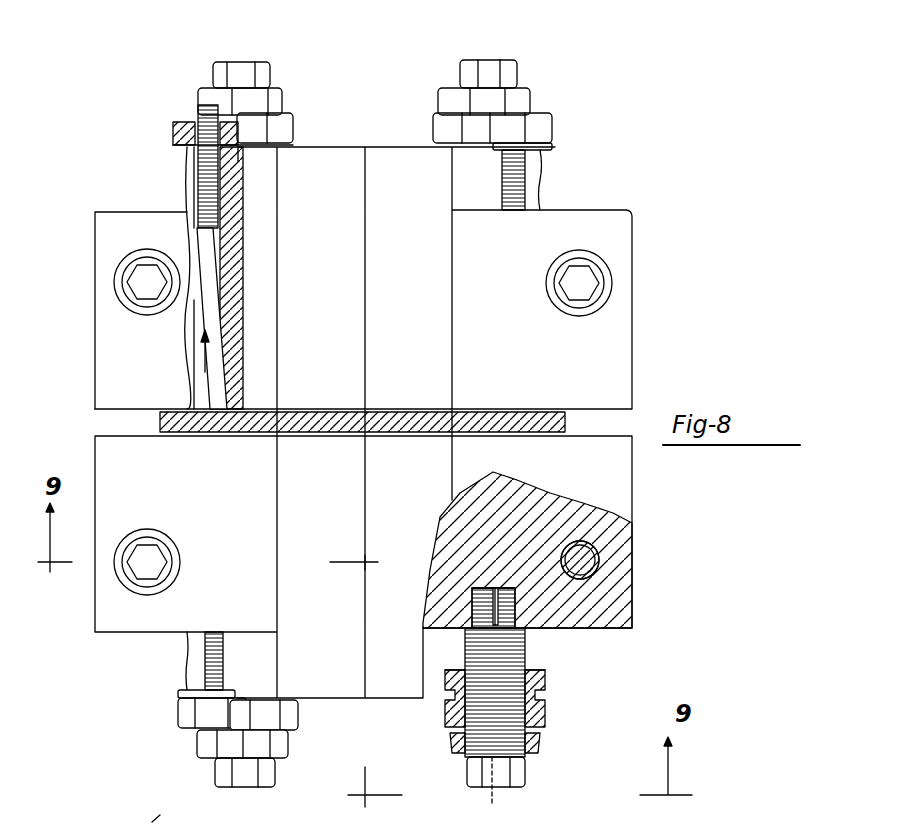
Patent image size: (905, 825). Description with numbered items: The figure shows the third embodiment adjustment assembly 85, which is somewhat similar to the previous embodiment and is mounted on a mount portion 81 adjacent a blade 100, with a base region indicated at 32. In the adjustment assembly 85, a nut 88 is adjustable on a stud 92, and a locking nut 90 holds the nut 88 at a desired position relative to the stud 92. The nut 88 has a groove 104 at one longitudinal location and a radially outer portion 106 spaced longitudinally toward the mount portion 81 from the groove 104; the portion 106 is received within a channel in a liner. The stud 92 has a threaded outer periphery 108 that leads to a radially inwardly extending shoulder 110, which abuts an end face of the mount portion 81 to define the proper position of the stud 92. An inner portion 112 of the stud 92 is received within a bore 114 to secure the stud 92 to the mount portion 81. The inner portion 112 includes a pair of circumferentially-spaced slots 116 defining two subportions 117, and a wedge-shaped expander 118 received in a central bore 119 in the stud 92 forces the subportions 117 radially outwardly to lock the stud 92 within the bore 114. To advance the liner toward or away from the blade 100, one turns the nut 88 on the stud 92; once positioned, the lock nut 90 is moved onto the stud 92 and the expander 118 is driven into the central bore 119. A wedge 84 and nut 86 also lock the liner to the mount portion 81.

The base frame 32 is at (177, 809).
The mount portion 81 is at (125, 226).
The wedge 84 is at (210, 260).
The adjustment assembly 85 is at (241, 50).
The nut 86 is at (175, 135).
The nut 88 is at (290, 128).
The locking nut 90 is at (273, 103).
The stud 92 is at (525, 770).
The blade 100 is at (503, 422).
The groove 104 is at (540, 687).
The radially outer portion 106 is at (540, 677).
The threaded outer periphery 108 is at (467, 648).
The shoulder 110 is at (540, 628).
The inner portion 112 is at (473, 607).
The bore 114 is at (527, 612).
The slots 116 is at (473, 636).
The subportions 117 is at (492, 595).
The wedge-shaped expander 118 is at (495, 587).
The central bore 119 is at (496, 791).